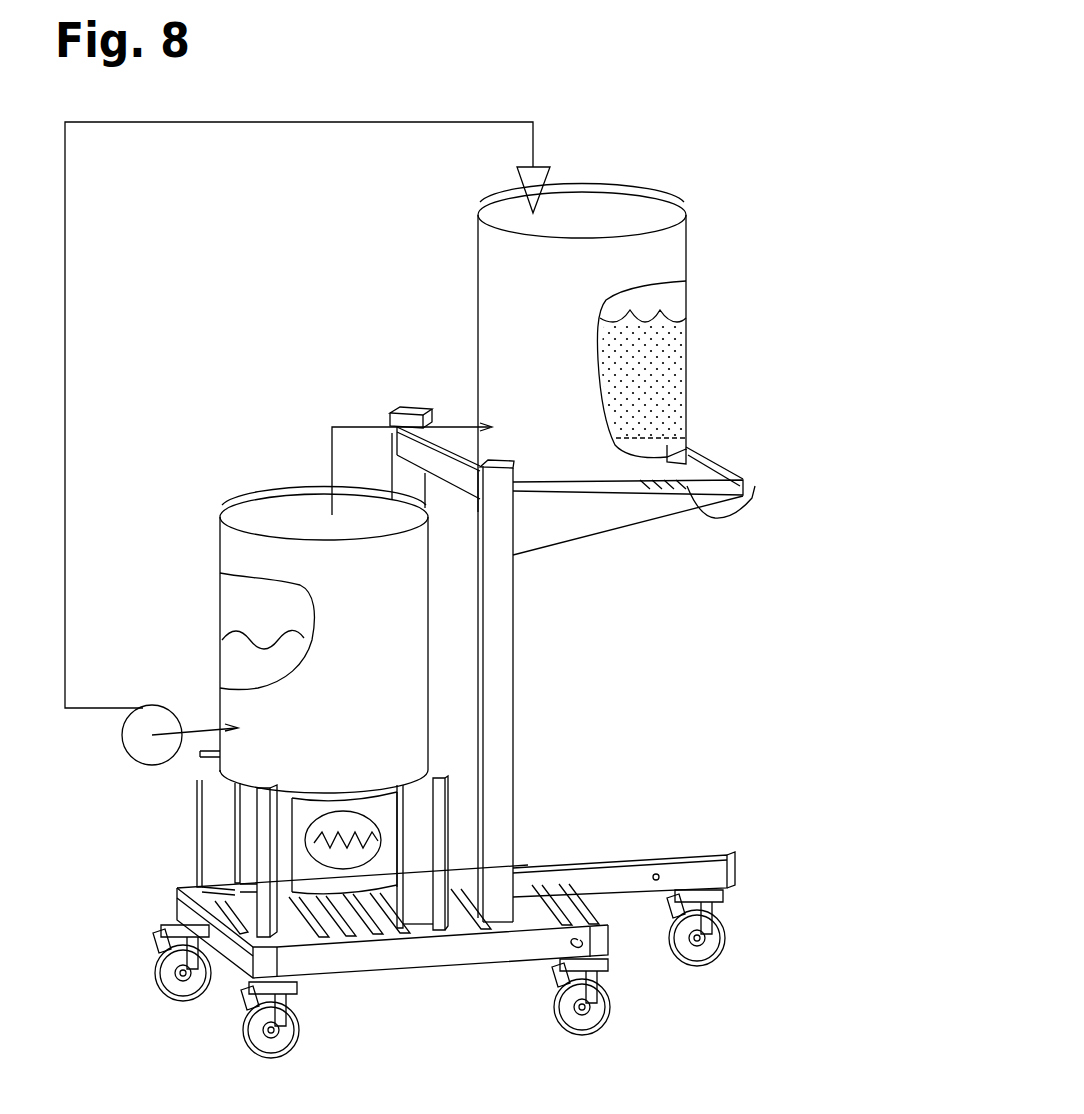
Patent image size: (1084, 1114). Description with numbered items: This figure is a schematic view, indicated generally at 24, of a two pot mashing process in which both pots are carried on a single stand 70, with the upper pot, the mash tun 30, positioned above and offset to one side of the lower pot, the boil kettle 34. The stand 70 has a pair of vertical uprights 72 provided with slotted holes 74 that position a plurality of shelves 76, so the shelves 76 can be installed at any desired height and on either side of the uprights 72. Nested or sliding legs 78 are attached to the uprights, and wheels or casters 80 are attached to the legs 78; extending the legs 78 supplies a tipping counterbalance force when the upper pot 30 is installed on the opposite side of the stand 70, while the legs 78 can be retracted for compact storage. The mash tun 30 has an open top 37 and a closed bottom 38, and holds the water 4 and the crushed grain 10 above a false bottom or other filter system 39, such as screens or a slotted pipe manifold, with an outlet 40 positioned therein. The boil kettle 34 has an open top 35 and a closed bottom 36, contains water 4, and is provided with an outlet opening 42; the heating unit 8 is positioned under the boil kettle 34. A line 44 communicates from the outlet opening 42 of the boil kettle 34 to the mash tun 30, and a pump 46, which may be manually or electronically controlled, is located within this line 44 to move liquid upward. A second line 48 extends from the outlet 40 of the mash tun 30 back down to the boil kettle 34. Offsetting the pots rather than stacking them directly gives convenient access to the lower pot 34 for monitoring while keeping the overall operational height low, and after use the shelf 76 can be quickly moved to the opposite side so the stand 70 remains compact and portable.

The processing cart assembly 24 is at (592, 96).
The open top 37 is at (676, 205).
The mash tun 30 is at (688, 260).
The water 4 is at (646, 379).
The crushed grain 10 is at (646, 426).
The false bottom or other filter system 39 is at (700, 462).
The closed bottom 38 is at (717, 516).
The shelves 76 is at (668, 547).
The line 44 is at (92, 362).
The line 48 is at (362, 427).
The outlet 40 is at (472, 425).
The open top 35 is at (288, 494).
The boil kettle 34 is at (222, 547).
The pump 46 is at (144, 758).
The outlet opening 42 is at (199, 754).
The slotted holes 74 is at (485, 623).
The vertical uprights 72 is at (515, 705).
The closed bottom 36 is at (445, 835).
The heating unit 8 is at (350, 866).
The stand 70 is at (451, 978).
The nested or sliding legs 78 is at (570, 922).
The wheels or casters 80 is at (596, 1017).